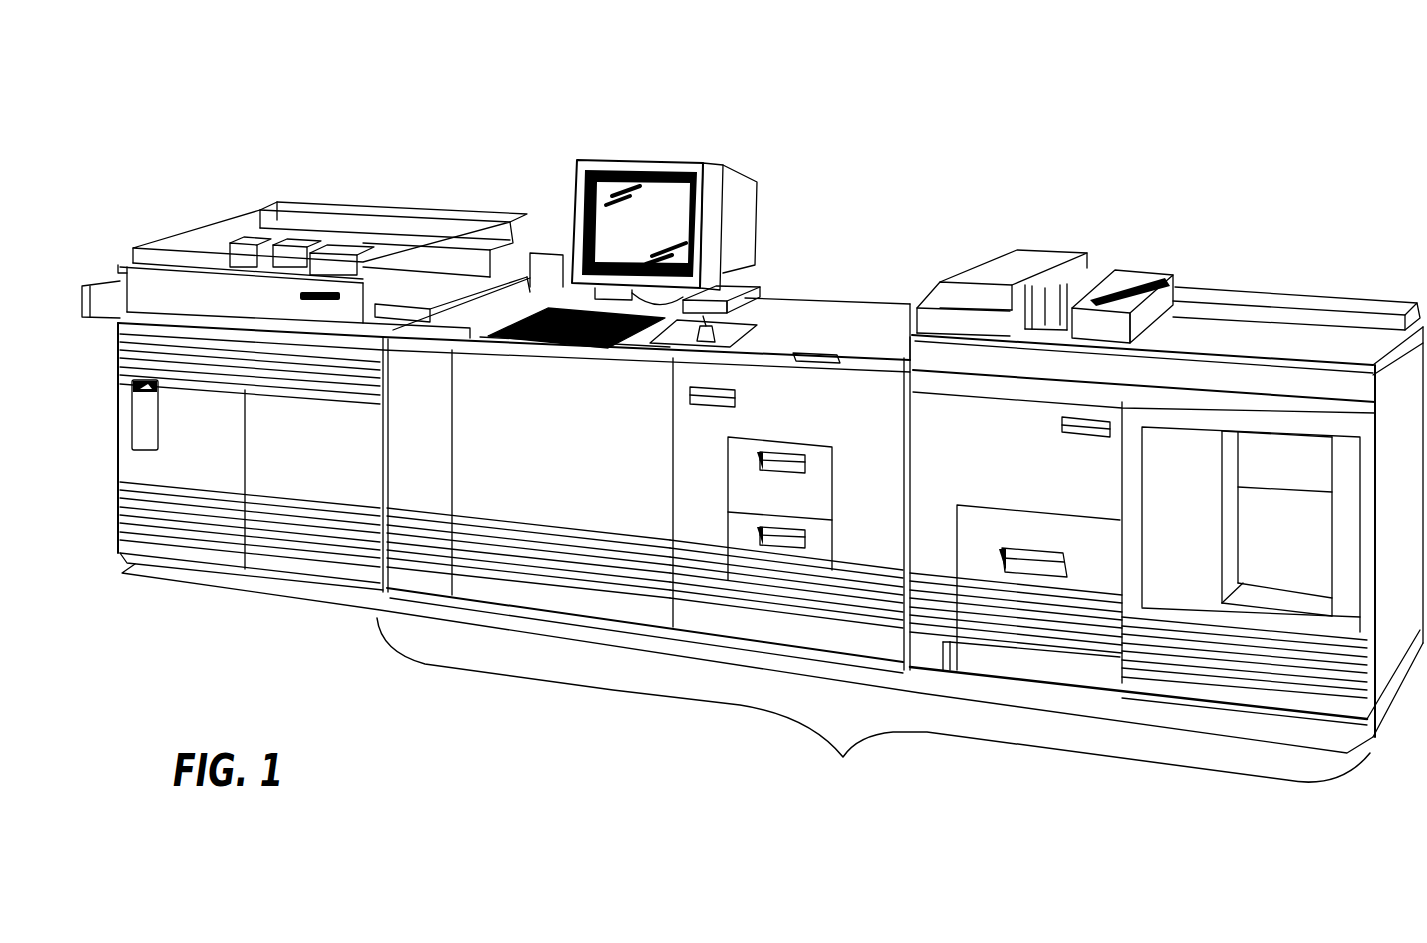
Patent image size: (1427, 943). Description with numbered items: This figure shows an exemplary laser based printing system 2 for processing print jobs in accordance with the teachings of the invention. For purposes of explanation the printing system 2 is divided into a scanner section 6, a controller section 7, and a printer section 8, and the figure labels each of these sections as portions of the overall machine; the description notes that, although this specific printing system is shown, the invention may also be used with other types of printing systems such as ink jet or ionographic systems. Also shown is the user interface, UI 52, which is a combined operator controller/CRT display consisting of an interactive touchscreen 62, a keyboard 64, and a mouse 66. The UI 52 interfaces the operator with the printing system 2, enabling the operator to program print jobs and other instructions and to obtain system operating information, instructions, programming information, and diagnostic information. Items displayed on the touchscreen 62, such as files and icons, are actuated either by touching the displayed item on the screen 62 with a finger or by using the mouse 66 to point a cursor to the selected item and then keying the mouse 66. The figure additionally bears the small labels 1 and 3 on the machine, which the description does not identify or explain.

The printing system 2 is at (899, 74).
The scanner section 6 is at (375, 178).
The controller section 7 is at (101, 458).
The printer section 8 is at (840, 788).
The UI 52 is at (675, 144).
The interactive touchscreen 62 is at (607, 230).
The keyboard 64 is at (562, 350).
The mouse 66 is at (660, 358).
The paper tray 1 is at (775, 462).
The paper tray 3 is at (1026, 562).